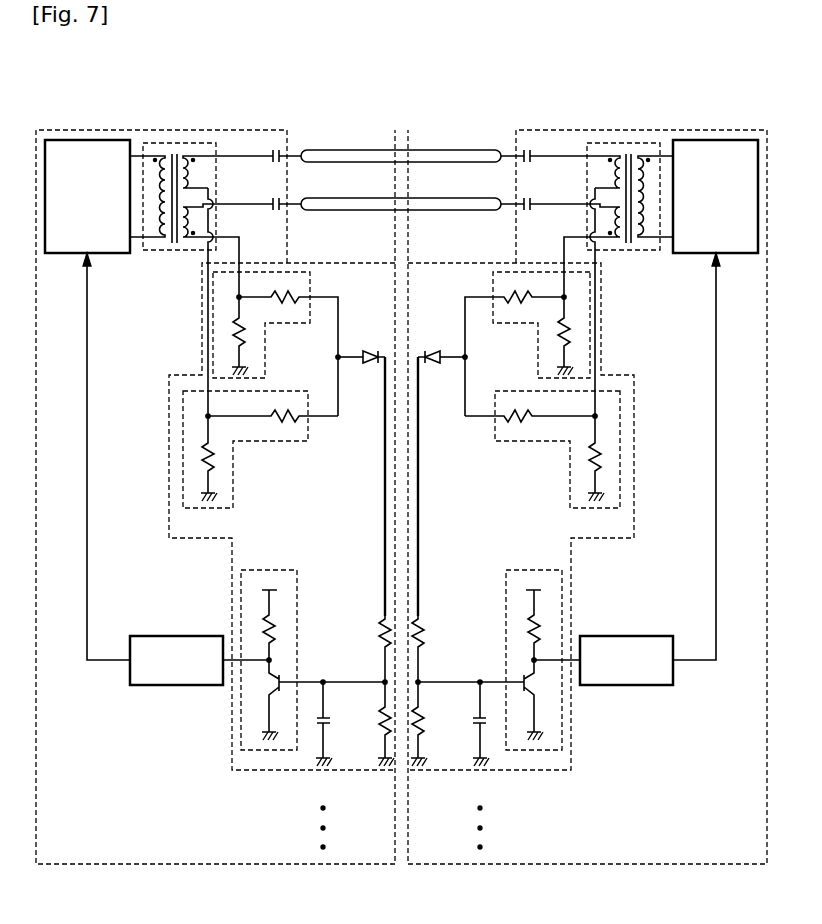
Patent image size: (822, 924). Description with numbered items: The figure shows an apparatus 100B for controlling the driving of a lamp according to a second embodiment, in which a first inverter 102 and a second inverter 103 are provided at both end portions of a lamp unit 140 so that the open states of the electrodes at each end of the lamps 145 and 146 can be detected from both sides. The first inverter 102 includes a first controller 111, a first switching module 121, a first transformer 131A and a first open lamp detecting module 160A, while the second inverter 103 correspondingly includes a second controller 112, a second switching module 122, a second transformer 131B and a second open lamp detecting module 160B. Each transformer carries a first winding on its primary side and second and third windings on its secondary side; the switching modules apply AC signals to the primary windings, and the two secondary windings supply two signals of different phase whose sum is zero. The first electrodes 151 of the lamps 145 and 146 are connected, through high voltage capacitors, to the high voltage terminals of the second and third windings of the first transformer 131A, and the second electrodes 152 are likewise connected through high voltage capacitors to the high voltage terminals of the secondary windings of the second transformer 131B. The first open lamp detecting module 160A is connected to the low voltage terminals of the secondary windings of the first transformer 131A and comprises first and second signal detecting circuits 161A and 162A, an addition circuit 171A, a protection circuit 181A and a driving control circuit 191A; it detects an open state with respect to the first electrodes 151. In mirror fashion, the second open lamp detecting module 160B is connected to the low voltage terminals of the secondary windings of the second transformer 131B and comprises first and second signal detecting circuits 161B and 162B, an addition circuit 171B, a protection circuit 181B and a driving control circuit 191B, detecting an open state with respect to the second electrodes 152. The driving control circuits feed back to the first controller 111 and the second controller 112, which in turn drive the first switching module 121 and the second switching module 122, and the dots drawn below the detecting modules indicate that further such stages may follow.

The apparatus for controlling driving of a lamp 100B is at (103, 58).
The first inverter 102 is at (215, 866).
The second inverter 103 is at (589, 866).
The first controller 111 is at (180, 635).
The second controller 112 is at (622, 635).
The first switching module 121 is at (90, 139).
The second switching module 122 is at (713, 139).
The first transformer 131A is at (177, 142).
The second transformer 131B is at (624, 142).
The lamp unit 140 is at (398, 141).
The lamp 145 is at (362, 150).
The lamp 146 is at (362, 211).
The first electrodes 151 is at (290, 142).
The second electrodes 152 is at (509, 150).
The first open lamp detecting module 160A is at (264, 772).
The second open lamp detecting module 160B is at (538, 772).
The first signal detecting circuit 161A is at (234, 467).
The first signal detecting circuit 161B is at (569, 467).
The second signal detecting circuit 162A is at (203, 301).
The second signal detecting circuit 162B is at (600, 301).
The addition circuit 171A is at (340, 356).
The addition circuit 171B is at (463, 356).
The protection circuit 181A is at (372, 363).
The protection circuit 181B is at (431, 363).
The driving control circuit 191A is at (272, 566).
The driving control circuit 191B is at (534, 566).